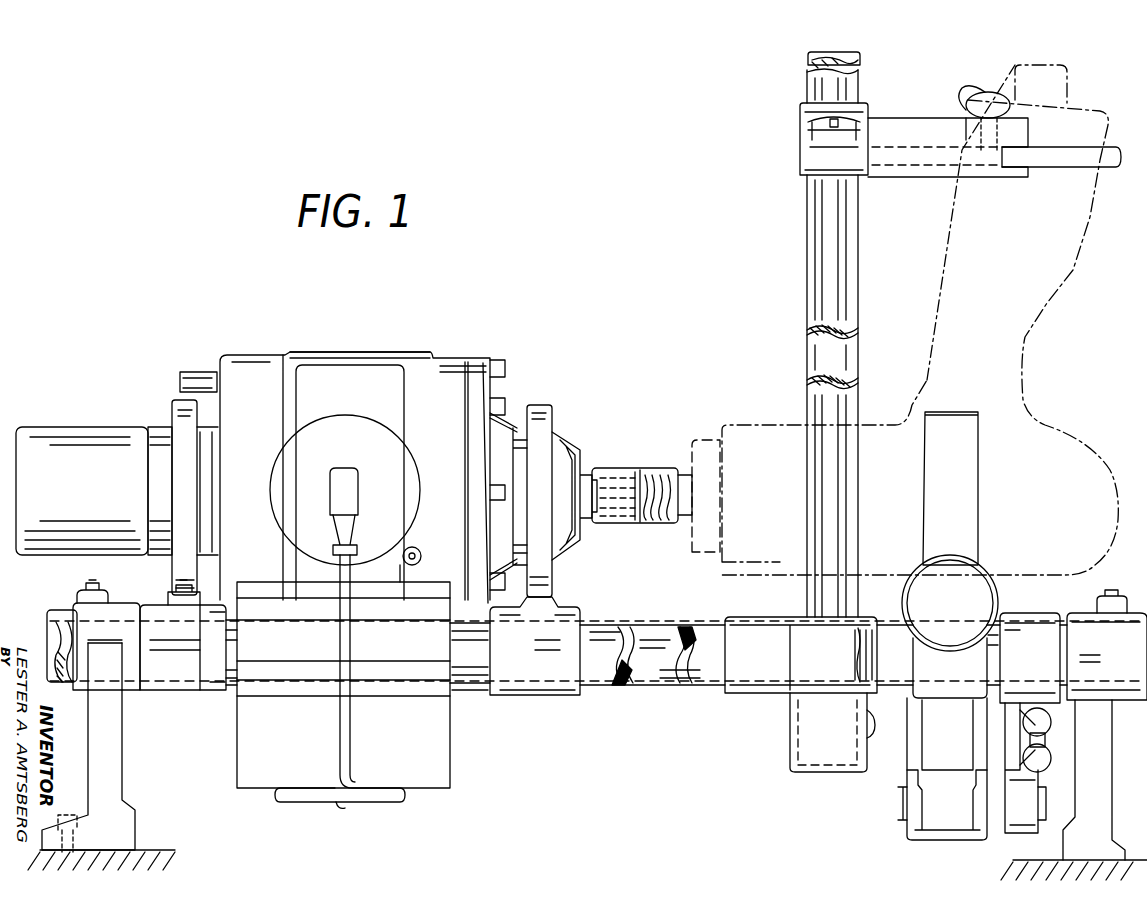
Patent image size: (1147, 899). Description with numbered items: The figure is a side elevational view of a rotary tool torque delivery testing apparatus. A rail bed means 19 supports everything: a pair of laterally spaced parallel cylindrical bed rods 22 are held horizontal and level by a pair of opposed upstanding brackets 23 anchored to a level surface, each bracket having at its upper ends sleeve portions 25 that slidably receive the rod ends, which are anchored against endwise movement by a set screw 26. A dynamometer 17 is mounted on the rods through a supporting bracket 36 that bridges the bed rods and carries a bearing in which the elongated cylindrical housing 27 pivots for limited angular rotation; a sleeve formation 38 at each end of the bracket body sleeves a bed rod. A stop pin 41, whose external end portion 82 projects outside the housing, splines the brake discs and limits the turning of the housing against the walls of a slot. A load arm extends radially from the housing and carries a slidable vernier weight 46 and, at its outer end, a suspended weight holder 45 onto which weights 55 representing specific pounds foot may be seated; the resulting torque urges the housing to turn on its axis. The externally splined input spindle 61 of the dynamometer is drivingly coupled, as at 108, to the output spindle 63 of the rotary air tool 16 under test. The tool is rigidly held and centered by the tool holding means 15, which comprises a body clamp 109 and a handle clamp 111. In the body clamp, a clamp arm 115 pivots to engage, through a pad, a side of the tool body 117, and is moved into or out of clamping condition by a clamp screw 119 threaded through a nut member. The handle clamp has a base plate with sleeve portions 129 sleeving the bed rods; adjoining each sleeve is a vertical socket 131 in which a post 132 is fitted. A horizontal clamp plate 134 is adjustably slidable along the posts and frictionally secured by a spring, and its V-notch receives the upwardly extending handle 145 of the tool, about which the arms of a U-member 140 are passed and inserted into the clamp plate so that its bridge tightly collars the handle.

The tool holding means 15 is at (908, 108).
The rotary air tool 16 is at (752, 425).
The dynamometer 17 is at (372, 343).
The rail bed means 19 is at (660, 688).
The bed rods 22 is at (642, 630).
The brackets 23 is at (125, 780).
The sleeve portions 25 is at (55, 605).
The set screw 26 is at (96, 590).
The housing 27 is at (300, 350).
The supporting bracket 36 is at (175, 414).
The sleeve formation 38 is at (218, 665).
The stop pin 41 is at (205, 588).
The weight holder 45 is at (352, 740).
The vernier weight 46 is at (332, 418).
The weights 55 is at (435, 772).
The input spindle 61 is at (605, 465).
The output spindle 63 is at (655, 468).
The external end portion 82 is at (200, 372).
The driving coupling 108 is at (662, 522).
The body clamp 109 is at (925, 785).
The handle clamp 111 is at (805, 215).
The clamp arm 115 is at (970, 530).
The tool body 117 is at (1033, 447).
The clamp screw 119 is at (983, 597).
The sleeve portions 129 is at (790, 595).
The vertical socket 131 is at (805, 740).
The post 132 is at (810, 358).
The clamp plate 134 is at (810, 155).
The U-member 140 is at (1060, 167).
The handle 145 is at (975, 232).